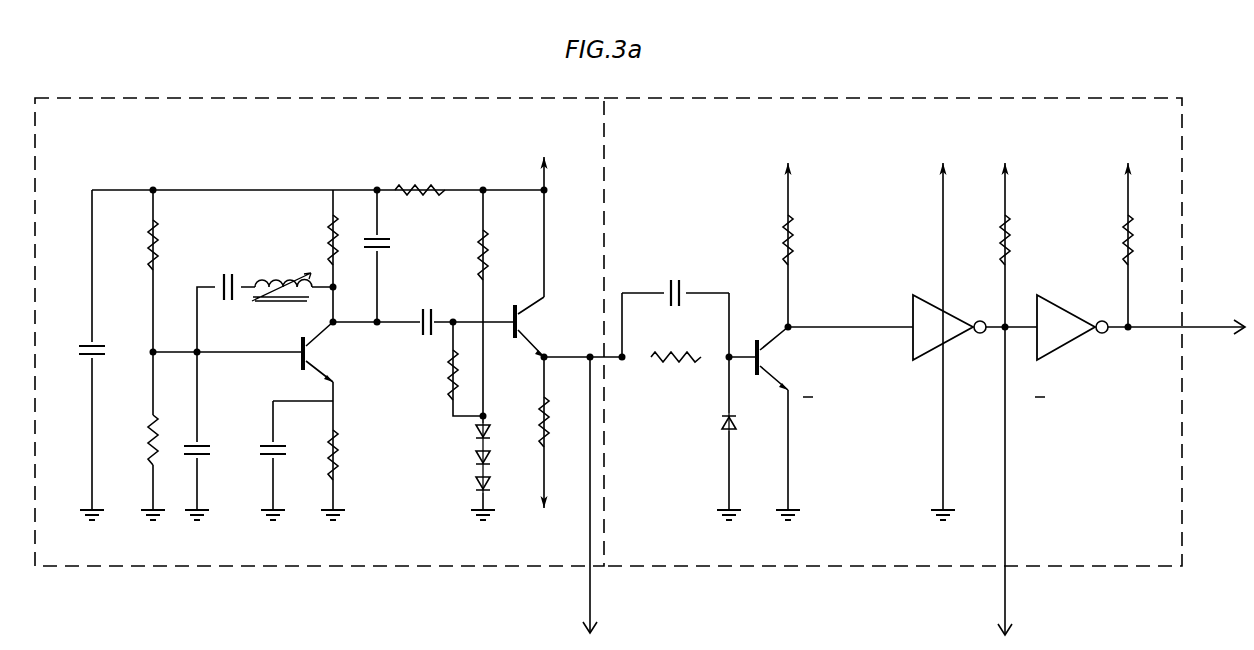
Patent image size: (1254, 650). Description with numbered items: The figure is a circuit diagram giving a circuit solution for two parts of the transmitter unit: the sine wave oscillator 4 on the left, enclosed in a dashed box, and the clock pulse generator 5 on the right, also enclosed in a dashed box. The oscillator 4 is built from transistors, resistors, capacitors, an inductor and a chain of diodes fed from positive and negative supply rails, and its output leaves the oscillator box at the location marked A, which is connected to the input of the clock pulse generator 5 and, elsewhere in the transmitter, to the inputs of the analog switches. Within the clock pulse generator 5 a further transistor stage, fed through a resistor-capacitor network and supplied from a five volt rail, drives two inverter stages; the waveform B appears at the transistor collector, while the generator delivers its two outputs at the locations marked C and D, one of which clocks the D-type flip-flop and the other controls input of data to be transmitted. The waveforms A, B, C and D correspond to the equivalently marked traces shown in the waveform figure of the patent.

The sine wave oscillator 4 is at (352, 80).
The clock pulse generator 5 is at (876, 99).
The waveform A is at (590, 594).
The waveform B is at (843, 327).
The waveform C is at (1005, 597).
The waveform D is at (1203, 327).